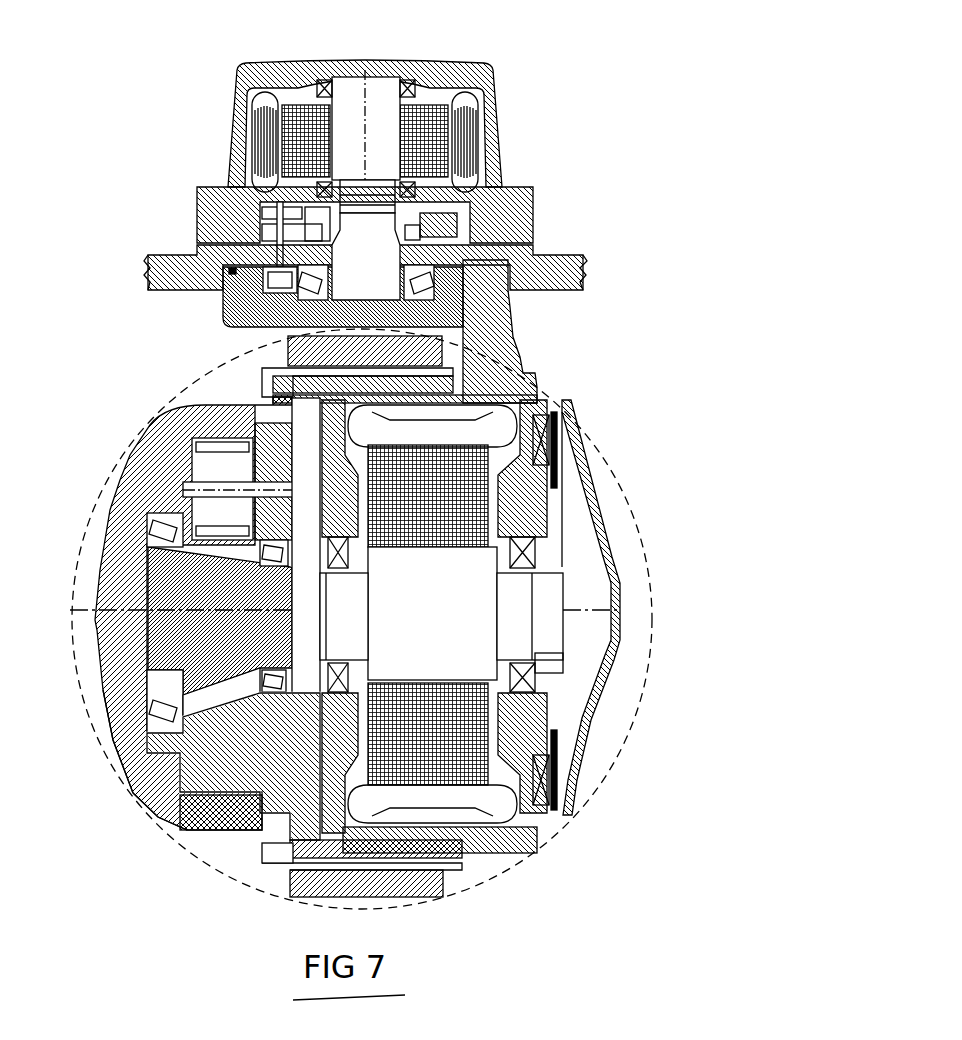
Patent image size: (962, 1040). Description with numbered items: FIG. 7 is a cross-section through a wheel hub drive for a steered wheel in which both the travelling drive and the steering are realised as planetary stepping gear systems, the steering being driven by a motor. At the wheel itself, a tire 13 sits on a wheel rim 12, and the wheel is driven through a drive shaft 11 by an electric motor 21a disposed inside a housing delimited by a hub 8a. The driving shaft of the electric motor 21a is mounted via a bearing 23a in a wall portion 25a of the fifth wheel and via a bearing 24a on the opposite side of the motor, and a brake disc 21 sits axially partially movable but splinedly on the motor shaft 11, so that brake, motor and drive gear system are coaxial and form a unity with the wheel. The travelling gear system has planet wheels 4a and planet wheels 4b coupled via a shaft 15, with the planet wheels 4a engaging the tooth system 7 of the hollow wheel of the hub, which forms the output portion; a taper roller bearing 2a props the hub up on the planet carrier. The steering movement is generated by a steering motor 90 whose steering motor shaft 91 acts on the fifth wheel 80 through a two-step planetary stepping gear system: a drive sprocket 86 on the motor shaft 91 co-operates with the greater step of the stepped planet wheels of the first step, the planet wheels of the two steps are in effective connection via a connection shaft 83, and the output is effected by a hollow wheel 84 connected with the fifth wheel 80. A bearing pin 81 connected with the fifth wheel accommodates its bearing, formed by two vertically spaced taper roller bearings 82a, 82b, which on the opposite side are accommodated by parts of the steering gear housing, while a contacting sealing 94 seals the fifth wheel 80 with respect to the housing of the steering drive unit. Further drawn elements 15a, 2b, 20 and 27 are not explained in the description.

The steering motor 90 is at (445, 152).
The steering motor shaft 91 is at (390, 132).
The drive sprocket 86 is at (388, 198).
The connection shaft 83 is at (447, 220).
The bearing pin 81 is at (380, 267).
The taper roller bearing 82b is at (197, 188).
The taper roller bearing 82a is at (303, 278).
The contacting sealing 94 is at (583, 267).
The hollow wheel 84 is at (467, 275).
The fifth wheel 80 is at (512, 357).
The planet wheels 4a is at (150, 413).
The planet wheels 4b is at (275, 400).
The shaft 15 is at (148, 672).
The hub shaft 15a is at (223, 482).
The hub 8a is at (120, 535).
The tooth system 7 is at (210, 830).
The taper roller bearing 2a is at (112, 760).
The housing wall 2b is at (160, 825).
The bearing 23a is at (240, 827).
The wheel rim 12 is at (265, 870).
The wall portion 25a is at (288, 870).
The tire 13 is at (435, 883).
The brake disc 21 is at (566, 777).
The rotor winding 20 is at (485, 763).
The electric motor 21a is at (440, 600).
The drive shaft 11 is at (518, 636).
The bearing 24a is at (520, 677).
The outer shell 27 is at (578, 442).